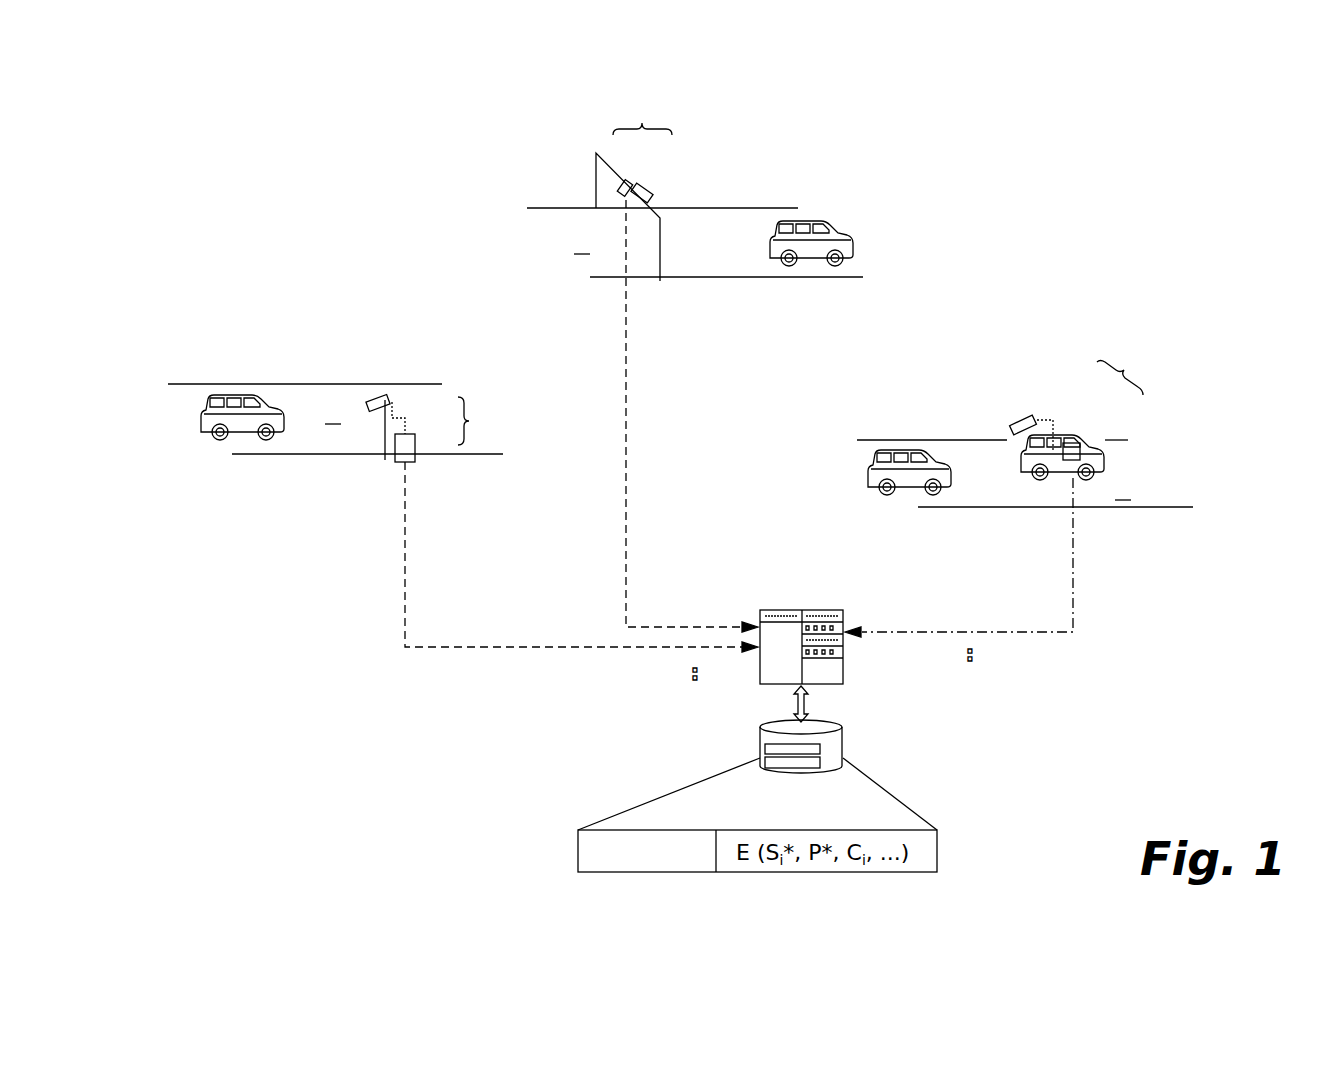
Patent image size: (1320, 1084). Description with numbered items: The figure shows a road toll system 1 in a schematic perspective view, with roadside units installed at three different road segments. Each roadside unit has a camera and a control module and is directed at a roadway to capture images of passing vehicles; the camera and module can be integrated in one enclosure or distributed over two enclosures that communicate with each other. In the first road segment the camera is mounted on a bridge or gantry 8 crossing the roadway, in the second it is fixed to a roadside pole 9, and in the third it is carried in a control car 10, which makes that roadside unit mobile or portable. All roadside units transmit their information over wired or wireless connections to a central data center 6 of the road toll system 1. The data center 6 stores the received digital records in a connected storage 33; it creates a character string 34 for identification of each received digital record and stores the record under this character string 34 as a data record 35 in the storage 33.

The road toll system 1 is at (1077, 195).
The central data center 6 is at (837, 670).
The gantry 8 is at (595, 168).
The roadside pole 9 is at (385, 457).
The control car 10 is at (1090, 453).
The storage 33 is at (838, 750).
The character string 34 is at (633, 866).
The data record 35 is at (780, 752).